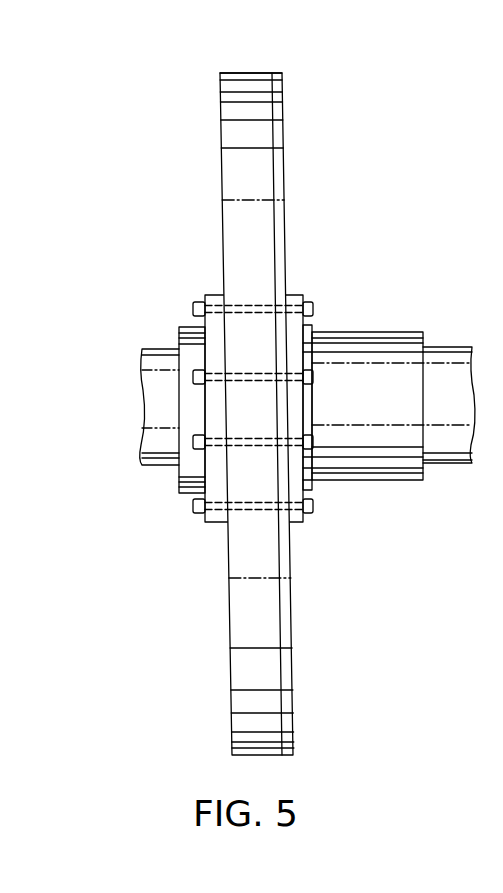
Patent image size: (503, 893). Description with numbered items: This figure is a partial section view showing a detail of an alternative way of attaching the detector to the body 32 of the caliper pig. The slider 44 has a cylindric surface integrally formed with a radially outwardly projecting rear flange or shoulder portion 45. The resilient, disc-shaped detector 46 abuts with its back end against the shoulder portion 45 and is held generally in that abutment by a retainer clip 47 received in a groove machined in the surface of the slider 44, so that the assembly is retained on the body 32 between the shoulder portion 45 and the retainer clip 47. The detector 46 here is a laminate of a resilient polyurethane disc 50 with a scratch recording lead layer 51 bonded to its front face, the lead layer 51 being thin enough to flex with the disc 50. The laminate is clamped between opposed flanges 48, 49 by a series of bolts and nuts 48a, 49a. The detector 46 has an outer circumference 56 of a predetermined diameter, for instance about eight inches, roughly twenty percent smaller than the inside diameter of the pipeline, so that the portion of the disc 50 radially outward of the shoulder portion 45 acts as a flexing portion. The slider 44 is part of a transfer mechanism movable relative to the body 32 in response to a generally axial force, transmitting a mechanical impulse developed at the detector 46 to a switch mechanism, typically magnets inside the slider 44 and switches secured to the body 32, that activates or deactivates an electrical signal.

The body 32 is at (157, 468).
The slider 44 is at (368, 443).
The rear flange or shoulder portion 45 is at (188, 327).
The detector 46 is at (253, 396).
The retainer clip 47 is at (312, 326).
The flange 48 is at (296, 525).
The bolts 48a is at (193, 508).
The flange 49 is at (213, 525).
The nuts 49a is at (310, 298).
The polyurethane disc 50 is at (232, 231).
The lead layer 51 is at (284, 216).
The outer circumference 56 is at (243, 73).